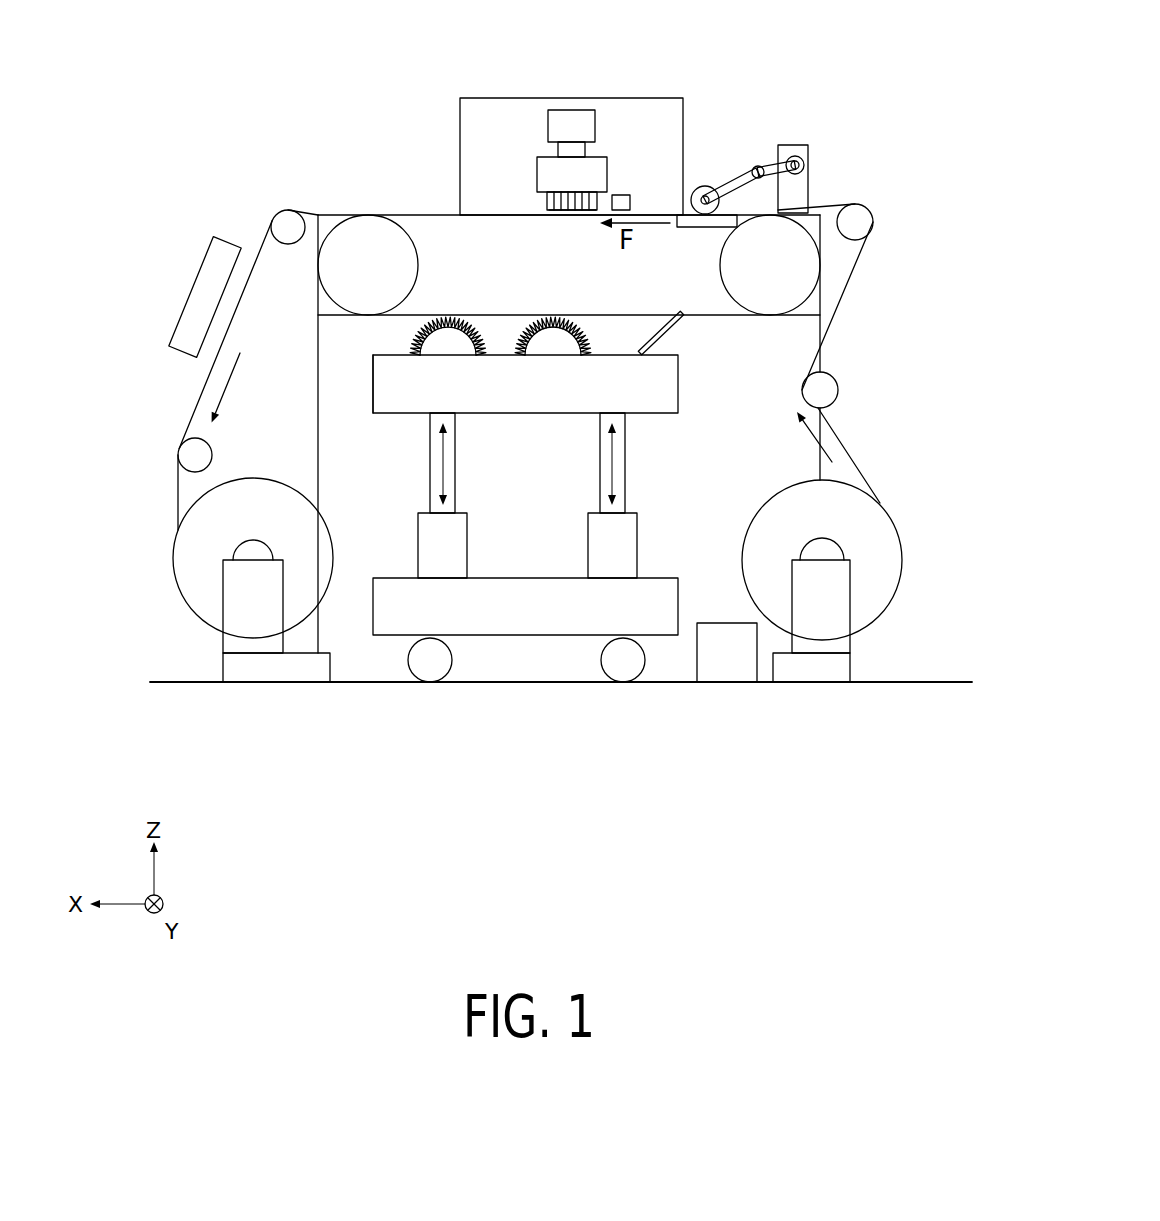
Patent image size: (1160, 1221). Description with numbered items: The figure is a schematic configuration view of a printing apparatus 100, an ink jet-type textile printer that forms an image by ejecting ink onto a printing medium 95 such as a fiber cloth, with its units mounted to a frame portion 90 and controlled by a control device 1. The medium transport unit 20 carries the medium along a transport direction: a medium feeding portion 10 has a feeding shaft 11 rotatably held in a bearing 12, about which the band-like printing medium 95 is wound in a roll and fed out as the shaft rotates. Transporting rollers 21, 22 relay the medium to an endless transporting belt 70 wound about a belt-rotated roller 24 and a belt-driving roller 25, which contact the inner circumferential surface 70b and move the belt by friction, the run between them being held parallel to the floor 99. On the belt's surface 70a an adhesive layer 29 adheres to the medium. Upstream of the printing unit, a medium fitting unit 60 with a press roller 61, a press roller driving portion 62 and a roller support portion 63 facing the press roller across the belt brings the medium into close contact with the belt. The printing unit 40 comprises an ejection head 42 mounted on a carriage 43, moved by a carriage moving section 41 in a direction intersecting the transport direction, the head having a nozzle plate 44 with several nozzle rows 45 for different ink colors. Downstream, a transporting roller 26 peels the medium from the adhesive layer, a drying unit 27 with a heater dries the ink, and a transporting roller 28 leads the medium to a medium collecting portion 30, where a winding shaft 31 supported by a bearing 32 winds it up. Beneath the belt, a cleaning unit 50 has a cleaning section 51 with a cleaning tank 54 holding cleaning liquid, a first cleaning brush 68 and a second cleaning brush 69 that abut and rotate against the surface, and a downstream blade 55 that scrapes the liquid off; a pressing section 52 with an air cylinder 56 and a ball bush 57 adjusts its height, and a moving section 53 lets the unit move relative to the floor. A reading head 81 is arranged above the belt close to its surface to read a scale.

The control device 1 is at (725, 682).
The medium feeding portion 10 is at (867, 581).
The feeding shaft 11 is at (820, 548).
The bearing 12 is at (840, 648).
The medium transport unit 20 is at (887, 253).
The transporting roller 21 is at (825, 388).
The transporting roller 22 is at (857, 222).
The belt-rotated roller 24 is at (798, 243).
The belt-driving roller 25 is at (355, 223).
The transporting roller 26 is at (285, 217).
The drying unit 27 is at (212, 253).
The transporting roller 28 is at (178, 451).
The adhesive layer 29 is at (616, 376).
The medium collecting portion 30 is at (215, 580).
The winding shaft 31 is at (247, 548).
The bearing 32 is at (235, 645).
The printing unit 40 is at (559, 140).
The carriage moving section 41 is at (570, 123).
The ejection head 42 is at (540, 185).
The carriage 43 is at (547, 155).
The nozzle plate 44 is at (548, 216).
The nozzle rows 45 is at (573, 213).
The cleaning unit 50 is at (568, 561).
The cleaning section 51 is at (695, 395).
The pressing section 52 is at (527, 495).
The moving section 53 is at (430, 674).
The cleaning tank 54 is at (373, 392).
The downstream blade 55 is at (657, 348).
The air cylinder 56 is at (458, 478).
The ball bush 57 is at (468, 548).
The medium fitting unit 60 is at (741, 141).
The press roller 61 is at (700, 186).
The press roller driving portion 62 is at (797, 145).
The roller support portion 63 is at (703, 228).
The first cleaning brush 68 is at (448, 350).
The second cleaning brush 69 is at (553, 350).
The transporting belt 70 is at (569, 400).
The surface 70a is at (427, 213).
The inner circumferential surface 70b is at (447, 218).
The reading head 81 is at (622, 194).
The frame portion 90 is at (318, 395).
The printing medium 95 is at (847, 450).
The floor 99 is at (955, 682).
The printing apparatus 100 is at (880, 25).